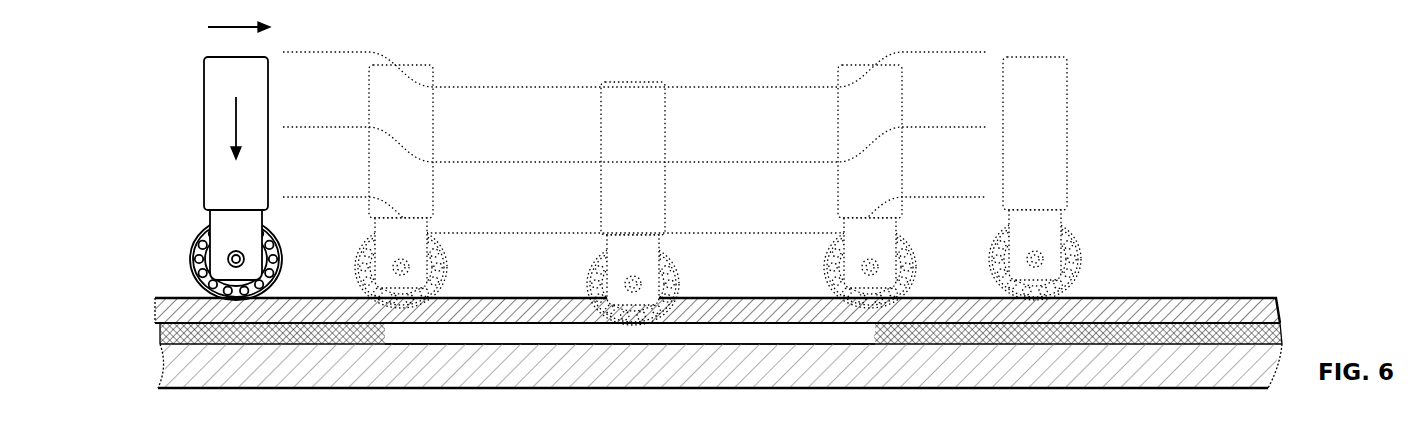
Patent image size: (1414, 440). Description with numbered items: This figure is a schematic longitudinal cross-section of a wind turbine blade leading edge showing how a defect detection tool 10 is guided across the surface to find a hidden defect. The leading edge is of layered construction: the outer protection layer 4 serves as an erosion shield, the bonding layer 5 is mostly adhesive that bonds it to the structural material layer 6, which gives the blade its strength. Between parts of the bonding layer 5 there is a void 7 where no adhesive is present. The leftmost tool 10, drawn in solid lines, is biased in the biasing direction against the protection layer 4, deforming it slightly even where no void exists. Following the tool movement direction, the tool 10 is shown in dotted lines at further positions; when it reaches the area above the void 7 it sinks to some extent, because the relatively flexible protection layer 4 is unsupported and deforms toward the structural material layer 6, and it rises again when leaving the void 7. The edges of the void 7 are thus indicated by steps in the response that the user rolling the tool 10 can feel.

The outer protection layer 4 is at (160, 312).
The bonding layer 5 is at (162, 334).
The structural material layer 6 is at (176, 363).
The void 7 is at (592, 333).
The tool 10 is at (174, 92).